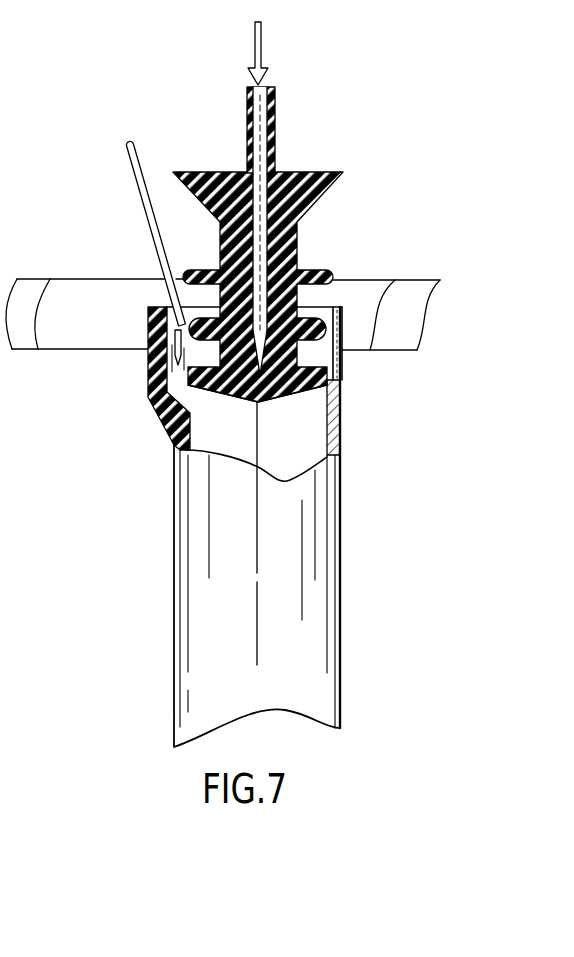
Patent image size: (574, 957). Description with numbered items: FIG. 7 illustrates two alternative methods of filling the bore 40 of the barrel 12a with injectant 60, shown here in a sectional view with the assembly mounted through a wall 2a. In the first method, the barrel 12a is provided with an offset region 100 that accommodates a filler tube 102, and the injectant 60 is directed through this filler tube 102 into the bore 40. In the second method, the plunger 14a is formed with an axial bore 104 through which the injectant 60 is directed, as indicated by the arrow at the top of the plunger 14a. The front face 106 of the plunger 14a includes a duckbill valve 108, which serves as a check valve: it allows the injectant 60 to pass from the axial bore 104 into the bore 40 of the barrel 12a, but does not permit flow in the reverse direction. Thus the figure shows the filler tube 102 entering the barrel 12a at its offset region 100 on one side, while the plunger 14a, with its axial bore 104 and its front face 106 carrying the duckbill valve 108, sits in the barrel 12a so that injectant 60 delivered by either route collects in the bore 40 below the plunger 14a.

The wall 2a is at (385, 196).
The barrel 12a is at (346, 548).
The plunger 14a is at (297, 250).
The bore 40 is at (278, 443).
The injectant 60 is at (267, 43).
The offset region 100 is at (152, 354).
The filler tube 102 is at (138, 196).
The axial bore 104 is at (272, 90).
The front face 106 is at (328, 394).
The duckbill valve 108 is at (280, 399).